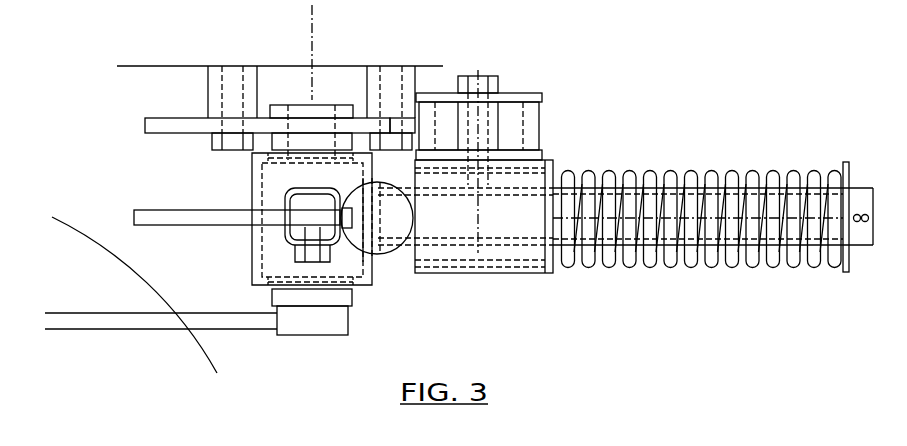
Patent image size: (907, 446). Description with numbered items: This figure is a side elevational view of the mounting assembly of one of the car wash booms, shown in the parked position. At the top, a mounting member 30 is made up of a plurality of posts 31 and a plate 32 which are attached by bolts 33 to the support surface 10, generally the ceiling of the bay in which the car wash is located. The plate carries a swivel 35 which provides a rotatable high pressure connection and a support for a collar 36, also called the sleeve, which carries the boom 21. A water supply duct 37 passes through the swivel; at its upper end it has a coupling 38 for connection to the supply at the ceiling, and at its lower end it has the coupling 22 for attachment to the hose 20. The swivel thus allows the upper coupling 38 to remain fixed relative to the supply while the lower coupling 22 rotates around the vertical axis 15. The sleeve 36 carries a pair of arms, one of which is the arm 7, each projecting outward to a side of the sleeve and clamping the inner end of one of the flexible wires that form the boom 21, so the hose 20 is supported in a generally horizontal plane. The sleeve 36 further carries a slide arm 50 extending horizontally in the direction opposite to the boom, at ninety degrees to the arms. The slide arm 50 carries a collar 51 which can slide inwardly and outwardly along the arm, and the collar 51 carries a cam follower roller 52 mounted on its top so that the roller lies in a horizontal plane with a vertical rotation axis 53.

The arm 7 is at (253, 203).
The support surface 10 is at (130, 66).
The vertical axis 15 is at (312, 50).
The hose 20 is at (208, 328).
The spring boom 21 is at (158, 226).
The inner swivel coupling 22 is at (317, 327).
The mounting member 30 is at (448, 59).
The post 31 is at (410, 67).
The plate 32 is at (183, 118).
The bolt 33 is at (212, 148).
The swivel 35 is at (300, 108).
The collar (sleeve) 36 is at (250, 258).
The water supply duct 37 is at (297, 178).
The upper coupling 38 is at (337, 100).
The slide arm 50 is at (598, 182).
The collar 51 is at (531, 182).
The cam follower roller 52 is at (528, 110).
The vertical rotation axis 53 is at (478, 253).